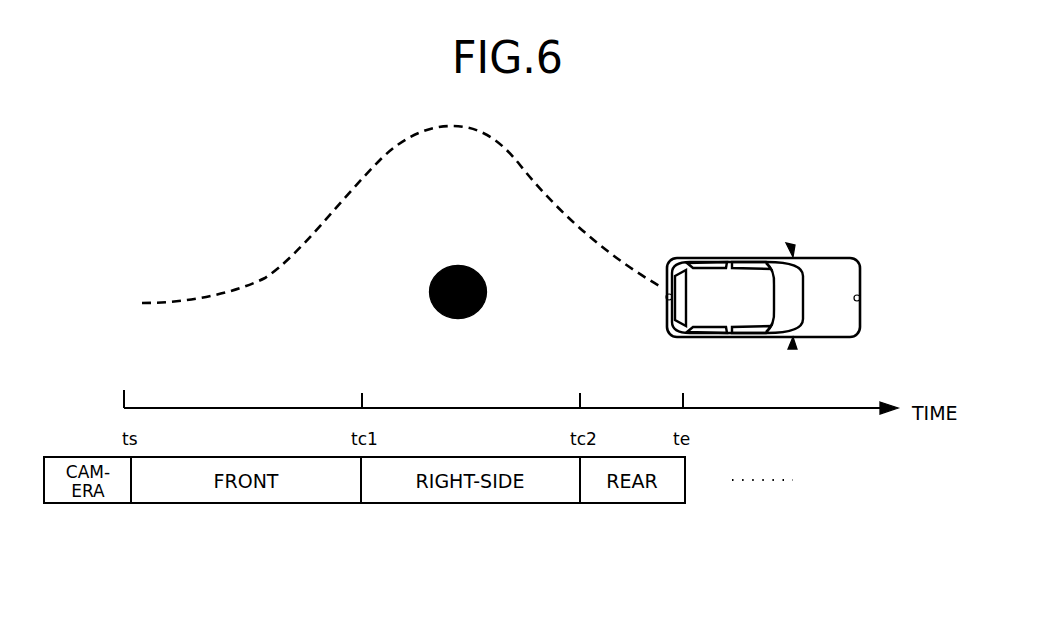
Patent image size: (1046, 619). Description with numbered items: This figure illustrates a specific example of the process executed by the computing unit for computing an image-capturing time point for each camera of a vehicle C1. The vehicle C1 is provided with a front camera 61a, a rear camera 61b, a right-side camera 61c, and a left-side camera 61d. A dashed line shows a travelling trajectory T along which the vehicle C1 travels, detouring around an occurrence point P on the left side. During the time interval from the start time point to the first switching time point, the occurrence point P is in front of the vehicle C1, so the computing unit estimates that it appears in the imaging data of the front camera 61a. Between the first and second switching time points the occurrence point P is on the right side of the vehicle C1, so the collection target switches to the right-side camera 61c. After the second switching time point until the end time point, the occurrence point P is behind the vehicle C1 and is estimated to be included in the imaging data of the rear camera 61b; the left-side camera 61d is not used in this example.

The front camera 61a is at (860, 298).
The rear camera 61b is at (667, 299).
The right-side camera 61c is at (793, 348).
The left-side camera 61d is at (793, 247).
The vehicle C1 is at (733, 258).
The occurrence point P is at (459, 266).
The travelling trajectory T is at (516, 159).